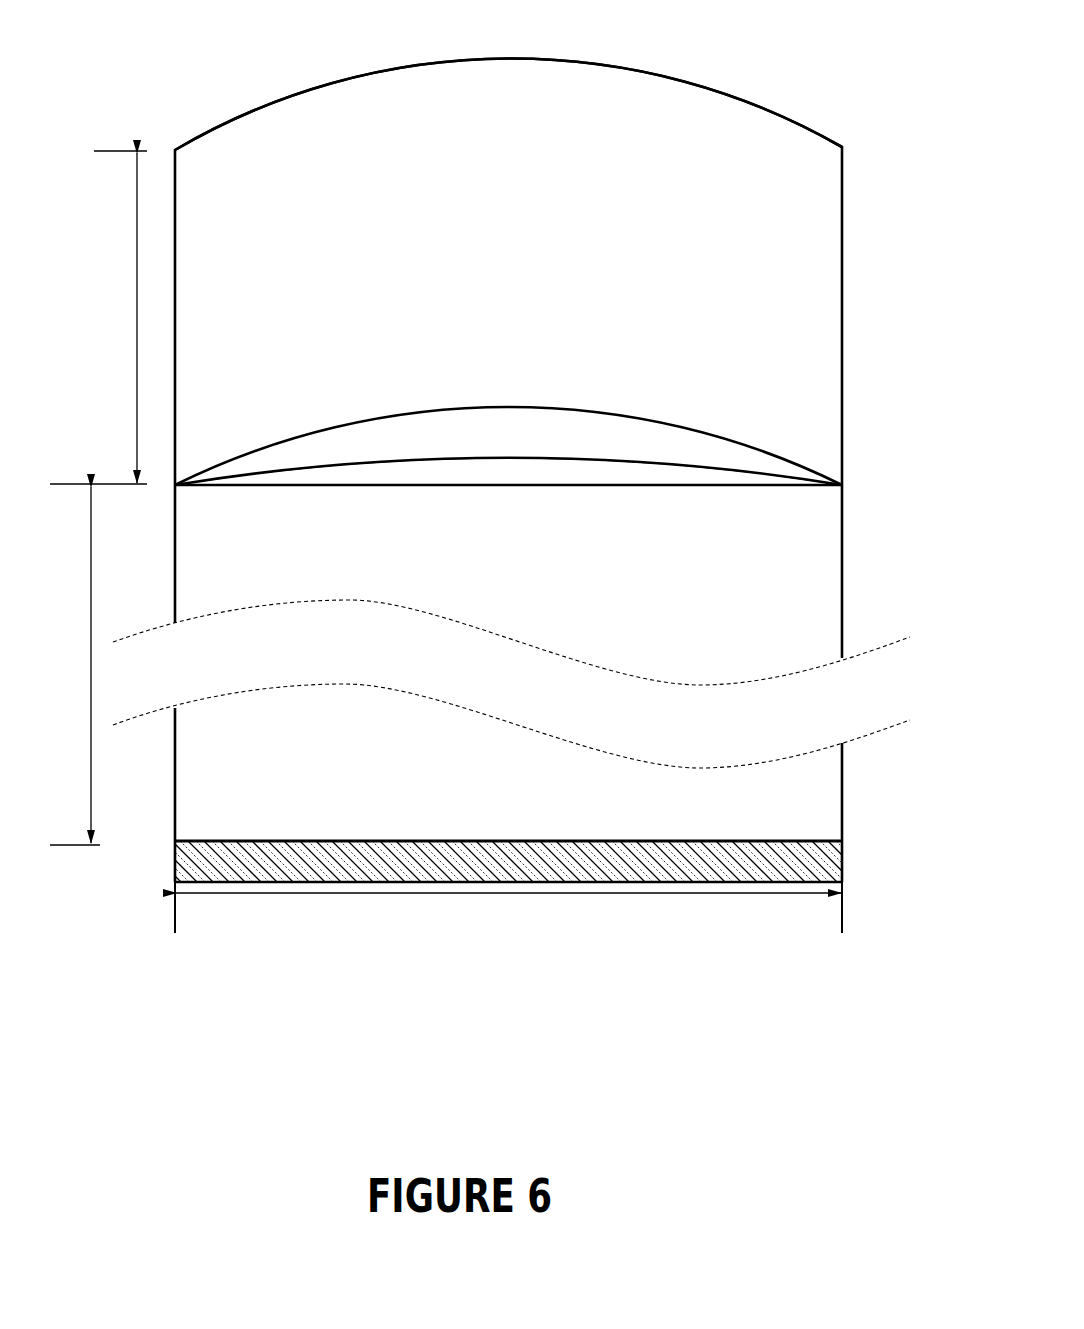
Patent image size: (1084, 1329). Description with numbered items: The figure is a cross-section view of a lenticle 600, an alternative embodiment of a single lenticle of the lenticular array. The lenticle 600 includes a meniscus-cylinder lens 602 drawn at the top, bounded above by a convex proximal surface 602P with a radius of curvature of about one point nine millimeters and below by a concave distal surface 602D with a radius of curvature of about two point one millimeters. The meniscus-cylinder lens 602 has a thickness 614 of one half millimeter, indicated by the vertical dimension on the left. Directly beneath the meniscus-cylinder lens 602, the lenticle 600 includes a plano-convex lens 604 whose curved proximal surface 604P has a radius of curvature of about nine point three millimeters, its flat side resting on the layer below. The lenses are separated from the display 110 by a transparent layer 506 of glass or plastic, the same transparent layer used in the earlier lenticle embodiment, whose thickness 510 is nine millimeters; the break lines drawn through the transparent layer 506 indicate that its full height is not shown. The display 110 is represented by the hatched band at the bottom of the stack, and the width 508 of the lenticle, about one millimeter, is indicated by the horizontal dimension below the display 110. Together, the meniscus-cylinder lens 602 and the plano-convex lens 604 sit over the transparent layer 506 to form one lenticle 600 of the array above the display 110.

The lenticle 600 is at (904, 90).
The meniscus-cylinder lens 602 is at (518, 238).
The proximal surface 602P is at (510, 58).
The distal surface 602D is at (510, 410).
The plano-convex lens 604 is at (580, 481).
The proximal surface 604P is at (510, 456).
The transparent layer 506 is at (742, 574).
The display 110 is at (842, 861).
The thickness 614 is at (120, 317).
The thickness 510 is at (98, 664).
The width 508 is at (508, 907).